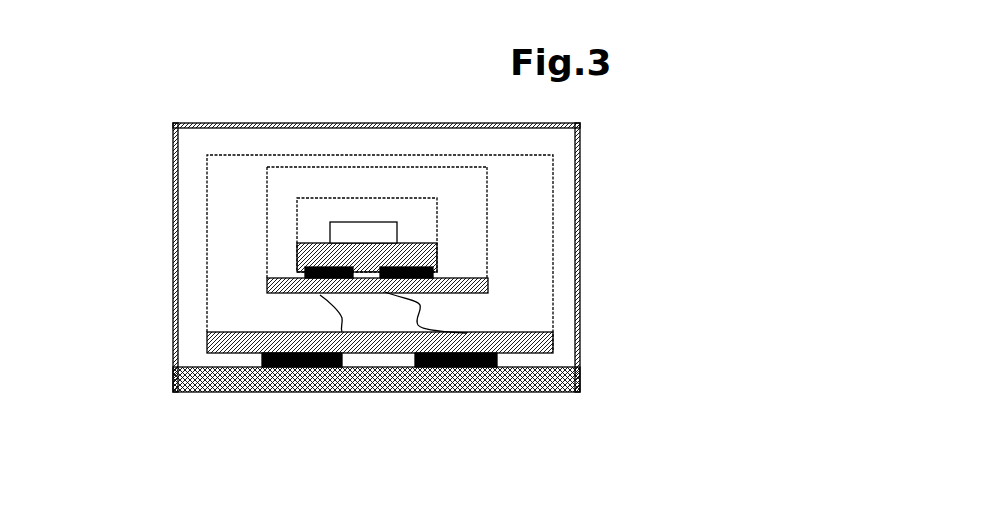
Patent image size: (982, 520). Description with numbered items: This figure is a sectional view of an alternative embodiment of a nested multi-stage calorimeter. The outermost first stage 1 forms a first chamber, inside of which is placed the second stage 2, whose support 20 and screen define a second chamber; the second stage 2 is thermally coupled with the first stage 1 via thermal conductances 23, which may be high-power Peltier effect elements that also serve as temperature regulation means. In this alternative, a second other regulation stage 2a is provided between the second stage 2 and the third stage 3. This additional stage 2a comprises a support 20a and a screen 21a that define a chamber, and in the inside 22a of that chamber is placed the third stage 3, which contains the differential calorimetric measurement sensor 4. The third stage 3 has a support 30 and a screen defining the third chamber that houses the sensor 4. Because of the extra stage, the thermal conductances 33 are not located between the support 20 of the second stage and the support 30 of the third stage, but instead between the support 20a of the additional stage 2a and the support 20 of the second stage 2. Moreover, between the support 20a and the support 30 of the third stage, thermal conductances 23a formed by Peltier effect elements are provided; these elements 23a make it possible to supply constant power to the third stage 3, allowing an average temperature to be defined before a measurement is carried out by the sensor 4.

The first stage 1 is at (600, 320).
The second stage 2 is at (203, 212).
The second other regulation stage 2a is at (257, 290).
The third stage 3 is at (445, 221).
The differential calorimetric measurement sensor 4 is at (340, 233).
The support 20 is at (527, 350).
The support 20a is at (207, 352).
The screen 21a is at (262, 183).
The inside 22a is at (302, 185).
The thermal conductances 23 is at (283, 295).
The thermal conductances 23a is at (305, 272).
The support 30 is at (440, 257).
The thermal conductances 33 is at (500, 352).